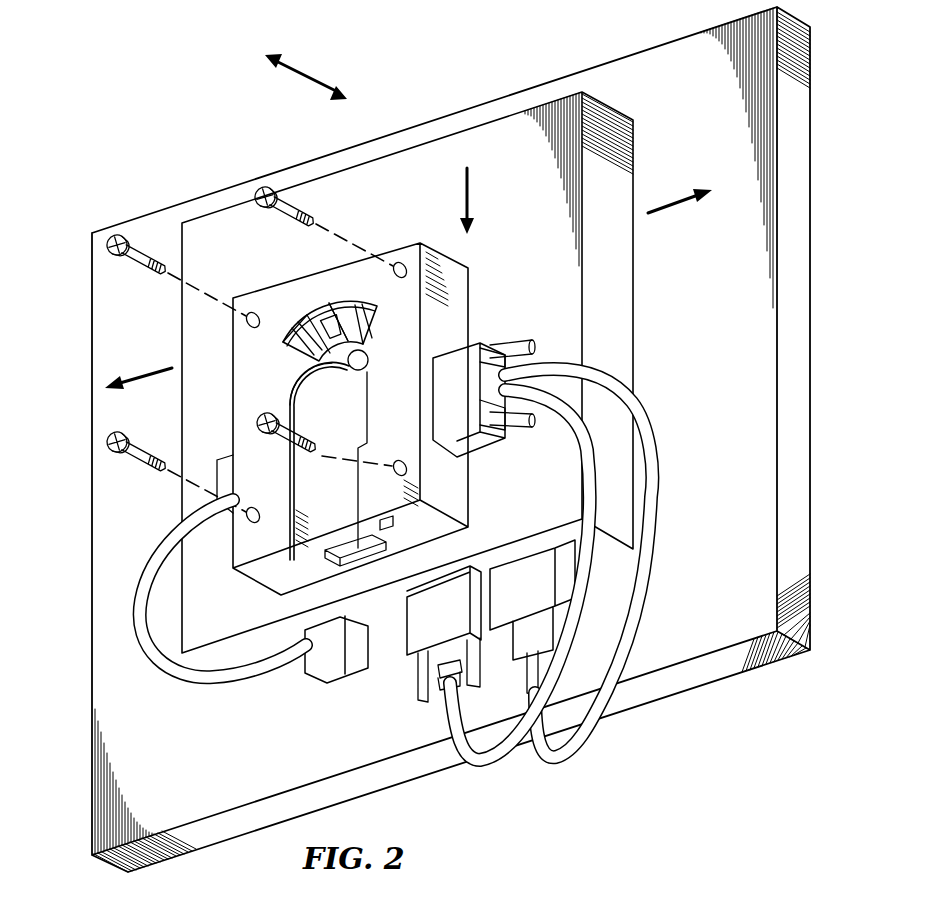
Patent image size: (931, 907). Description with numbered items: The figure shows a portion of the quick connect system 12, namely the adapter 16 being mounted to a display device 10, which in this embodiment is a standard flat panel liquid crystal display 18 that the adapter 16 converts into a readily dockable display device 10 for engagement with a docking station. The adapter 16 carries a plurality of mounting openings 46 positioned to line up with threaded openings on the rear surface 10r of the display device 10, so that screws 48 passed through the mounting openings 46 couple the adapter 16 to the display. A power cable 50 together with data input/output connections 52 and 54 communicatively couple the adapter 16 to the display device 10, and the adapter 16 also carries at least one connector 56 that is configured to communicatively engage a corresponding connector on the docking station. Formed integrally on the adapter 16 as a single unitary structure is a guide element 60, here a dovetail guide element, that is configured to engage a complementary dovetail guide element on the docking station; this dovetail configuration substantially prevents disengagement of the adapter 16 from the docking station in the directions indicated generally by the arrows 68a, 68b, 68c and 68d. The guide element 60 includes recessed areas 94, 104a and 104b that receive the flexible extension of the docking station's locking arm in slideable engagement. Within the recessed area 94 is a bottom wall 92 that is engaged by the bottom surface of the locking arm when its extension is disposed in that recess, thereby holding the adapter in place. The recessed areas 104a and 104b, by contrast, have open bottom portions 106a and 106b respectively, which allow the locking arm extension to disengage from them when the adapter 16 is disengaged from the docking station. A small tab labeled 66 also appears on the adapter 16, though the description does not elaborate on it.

The display device 10 is at (462, 113).
The rear surface of display device 10r is at (502, 157).
The quick connect system 12 is at (488, 278).
The adapter 16 is at (462, 487).
The flat panel liquid crystal display 18 is at (797, 168).
The mounting openings 46 is at (400, 261).
The screws 48 is at (294, 200).
The power cable 50 is at (217, 683).
The data input/output 52 is at (487, 770).
The data input/output 54 is at (560, 770).
The connector 56 is at (352, 566).
The guide element 60 is at (369, 438).
The tab 66 is at (393, 523).
The arrow 68a is at (298, 76).
The arrow 68b is at (672, 209).
The arrow 68c is at (143, 377).
The arrow 68d is at (470, 192).
The bottom wall 92 is at (304, 333).
The recessed area 94 is at (338, 322).
The recessed area 104a is at (293, 320).
The recessed area 104b is at (346, 300).
The open bottom portion 106a is at (313, 366).
The open bottom portion 106b is at (368, 372).